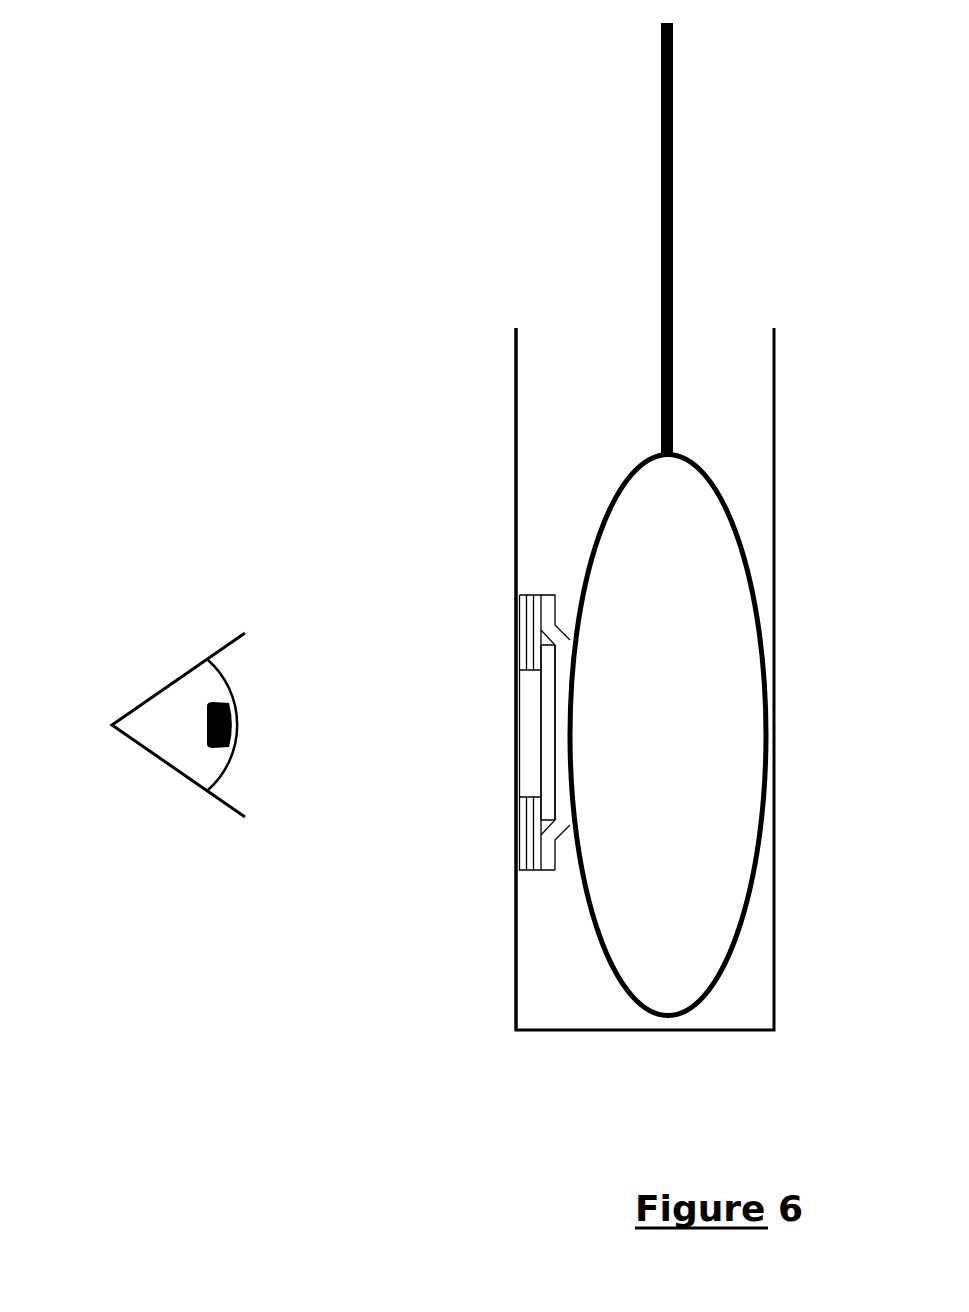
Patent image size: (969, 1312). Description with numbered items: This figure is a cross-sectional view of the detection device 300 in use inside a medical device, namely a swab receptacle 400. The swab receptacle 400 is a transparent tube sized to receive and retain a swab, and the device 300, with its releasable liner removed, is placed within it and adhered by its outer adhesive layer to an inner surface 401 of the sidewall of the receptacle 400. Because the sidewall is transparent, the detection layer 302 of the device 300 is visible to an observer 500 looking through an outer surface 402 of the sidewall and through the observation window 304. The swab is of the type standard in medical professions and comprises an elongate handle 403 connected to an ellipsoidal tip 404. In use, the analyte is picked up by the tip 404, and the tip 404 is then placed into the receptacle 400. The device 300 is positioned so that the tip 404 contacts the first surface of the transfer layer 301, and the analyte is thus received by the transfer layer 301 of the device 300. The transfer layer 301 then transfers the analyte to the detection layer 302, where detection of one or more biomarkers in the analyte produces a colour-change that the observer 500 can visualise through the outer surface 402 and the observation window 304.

The detection device 300 is at (492, 625).
The transfer layer 301 is at (562, 666).
The detection layer 302 is at (547, 712).
The observation window 304 is at (536, 731).
The swab receptacle 400 is at (330, 318).
The inner surface 401 is at (518, 433).
The outer surface 402 is at (516, 498).
The elongate handle 403 is at (661, 222).
The ellipsoidal tip 404 is at (655, 532).
The observer 500 is at (152, 653).